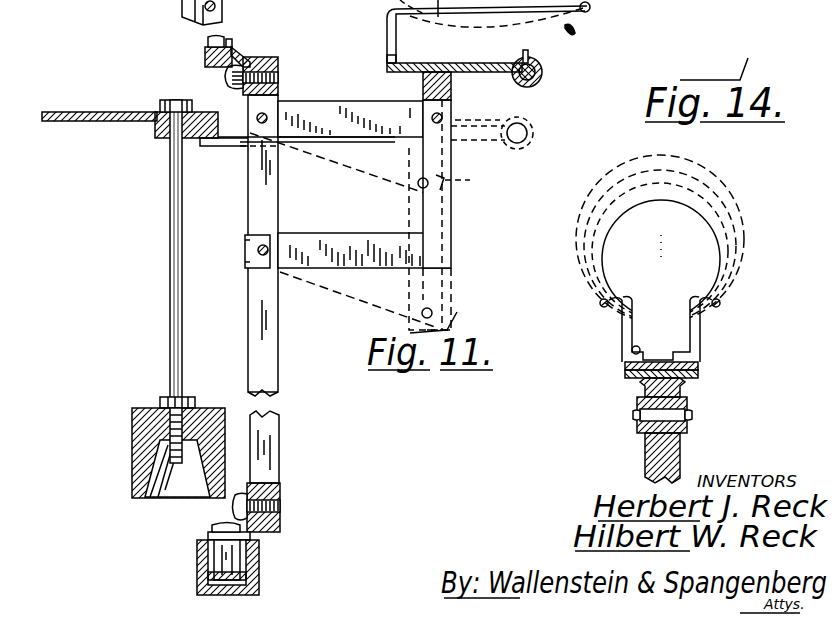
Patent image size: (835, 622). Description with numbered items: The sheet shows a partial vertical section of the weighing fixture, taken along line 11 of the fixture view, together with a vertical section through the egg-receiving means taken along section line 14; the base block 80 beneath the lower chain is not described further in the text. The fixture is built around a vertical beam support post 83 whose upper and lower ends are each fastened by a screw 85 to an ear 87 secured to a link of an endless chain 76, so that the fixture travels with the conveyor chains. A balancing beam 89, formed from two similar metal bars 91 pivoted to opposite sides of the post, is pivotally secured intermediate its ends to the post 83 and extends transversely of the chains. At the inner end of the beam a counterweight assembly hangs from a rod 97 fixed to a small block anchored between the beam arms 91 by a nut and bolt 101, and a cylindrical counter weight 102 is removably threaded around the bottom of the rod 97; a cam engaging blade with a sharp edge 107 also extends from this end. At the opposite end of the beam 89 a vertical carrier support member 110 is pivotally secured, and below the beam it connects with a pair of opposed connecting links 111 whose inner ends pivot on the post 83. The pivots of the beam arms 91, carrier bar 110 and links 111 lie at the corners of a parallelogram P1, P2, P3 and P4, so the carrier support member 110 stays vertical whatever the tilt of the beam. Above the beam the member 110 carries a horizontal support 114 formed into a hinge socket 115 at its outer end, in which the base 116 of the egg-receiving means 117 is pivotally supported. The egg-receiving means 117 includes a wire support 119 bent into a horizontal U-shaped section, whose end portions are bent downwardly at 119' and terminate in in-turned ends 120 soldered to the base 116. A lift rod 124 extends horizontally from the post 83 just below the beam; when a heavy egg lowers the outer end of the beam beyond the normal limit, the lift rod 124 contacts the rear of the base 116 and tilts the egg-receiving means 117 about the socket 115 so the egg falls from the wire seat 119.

In FIG. 11, the scale arm bracket 11 is at (230, 23).
In FIG. 11, the pan carrier plate 14 is at (496, 190).
In FIG. 11, the endless chain 76 is at (232, 560).
In FIG. 11, the base block 80 is at (197, 568).
In FIG. 11, the beam support post 83 is at (279, 303).
In FIG. 14, the beam support post 83 is at (670, 455).
In FIG. 11, the screw 85 is at (228, 75).
In FIG. 11, the ear 87 is at (240, 50).
In FIG. 11, the balancing beam 89 is at (331, 94).
In FIG. 11, the metal bar 91 is at (356, 110).
In FIG. 11, the rod 97 is at (170, 274).
In FIG. 11, the nut and bolt 101 is at (228, 184).
In FIG. 11, the cylindrical counter weight 102 is at (132, 431).
In FIG. 11, the sharp edge 107 is at (118, 122).
In FIG. 11, the carrier support member 110 is at (443, 222).
In FIG. 14, the carrier support member 110 is at (668, 393).
In FIG. 11, the connecting link 111 is at (377, 224).
In FIG. 11, the horizontal support 114 is at (540, 110).
In FIG. 14, the horizontal support 114 is at (700, 376).
In FIG. 11, the hinge socket 115 is at (533, 125).
In FIG. 11, the base 116 is at (480, 63).
In FIG. 14, the base 116 is at (700, 370).
In FIG. 11, the egg-receiving means 117 is at (626, 58).
In FIG. 14, the wire support 119 is at (695, 297).
In FIG. 11, the downwardly bent end portion 119' is at (459, 31).
In FIG. 14, the downwardly bent end portion 119' is at (651, 258).
In FIG. 11, the in-turned end 120 is at (391, 56).
In FIG. 14, the in-turned end 120 is at (632, 350).
In FIG. 11, the lift rod 124 is at (370, 143).
In FIG. 11, the pivot point P1 is at (267, 112).
In FIG. 11, the pivot point P2 is at (432, 112).
In FIG. 14, the pivot point P2 is at (692, 416).
In FIG. 11, the pivot point P3 is at (444, 248).
In FIG. 11, the pivot point P4 is at (258, 255).